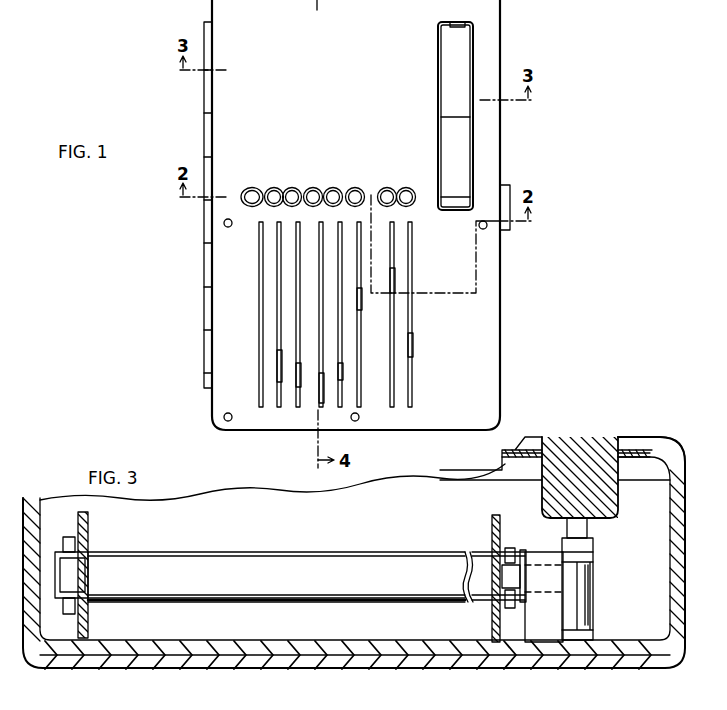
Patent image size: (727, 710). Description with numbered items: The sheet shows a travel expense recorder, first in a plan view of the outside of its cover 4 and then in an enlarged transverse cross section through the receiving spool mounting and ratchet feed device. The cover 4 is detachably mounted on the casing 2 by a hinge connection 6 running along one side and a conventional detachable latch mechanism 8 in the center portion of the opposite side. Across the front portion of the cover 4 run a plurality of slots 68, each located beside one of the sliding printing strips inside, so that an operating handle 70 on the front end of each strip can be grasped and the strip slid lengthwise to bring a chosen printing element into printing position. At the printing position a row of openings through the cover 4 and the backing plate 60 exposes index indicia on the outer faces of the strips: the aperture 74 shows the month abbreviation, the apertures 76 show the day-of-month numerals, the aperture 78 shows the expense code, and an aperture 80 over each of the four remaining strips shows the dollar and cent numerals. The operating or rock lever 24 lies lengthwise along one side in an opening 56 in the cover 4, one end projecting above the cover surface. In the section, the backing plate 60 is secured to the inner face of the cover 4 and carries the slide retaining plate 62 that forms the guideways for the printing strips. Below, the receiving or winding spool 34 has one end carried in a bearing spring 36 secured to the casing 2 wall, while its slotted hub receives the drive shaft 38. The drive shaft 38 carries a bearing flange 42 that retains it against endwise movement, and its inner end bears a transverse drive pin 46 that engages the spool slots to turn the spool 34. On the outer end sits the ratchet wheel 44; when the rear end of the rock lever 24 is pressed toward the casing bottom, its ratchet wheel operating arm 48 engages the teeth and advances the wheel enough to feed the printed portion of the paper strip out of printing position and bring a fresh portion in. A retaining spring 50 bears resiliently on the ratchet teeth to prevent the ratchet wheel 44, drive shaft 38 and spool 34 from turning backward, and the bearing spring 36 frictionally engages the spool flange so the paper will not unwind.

In FIG. 3, the casing 2 is at (300, 666).
In FIG. 1, the cover 4 is at (325, 91).
In FIG. 3, the cover 4 is at (678, 455).
In FIG. 1, the hinge connection 6 is at (204, 354).
In FIG. 1, the detachable latch mechanism 8 is at (505, 230).
In FIG. 1, the operating or rock lever 24 is at (446, 45).
In FIG. 3, the operating or rock lever 24 is at (616, 498).
In FIG. 3, the receiving or winding spool 34 is at (318, 552).
In FIG. 3, the bearing spring 36 is at (65, 540).
In FIG. 3, the drive shaft 38 is at (548, 590).
In FIG. 3, the bearing flange 42 is at (510, 548).
In FIG. 3, the ratchet wheel 44 is at (594, 600).
In FIG. 3, the drive pin 46 is at (507, 608).
In FIG. 3, the ratchet wheel operating arm 48 is at (588, 532).
In FIG. 3, the retaining spring 50 is at (590, 628).
In FIG. 1, the opening 56 is at (473, 165).
In FIG. 3, the opening 56 is at (627, 452).
In FIG. 3, the backing plate 60 is at (522, 453).
In FIG. 3, the slide retaining plate 62 is at (528, 457).
In FIG. 1, the slots 68 is at (296, 311).
In FIG. 1, the operating handle 70 is at (261, 392).
In FIG. 1, the aperture 74 is at (252, 192).
In FIG. 1, the apertures 76 is at (292, 192).
In FIG. 1, the aperture 78 is at (313, 192).
In FIG. 1, the aperture 80 is at (355, 192).